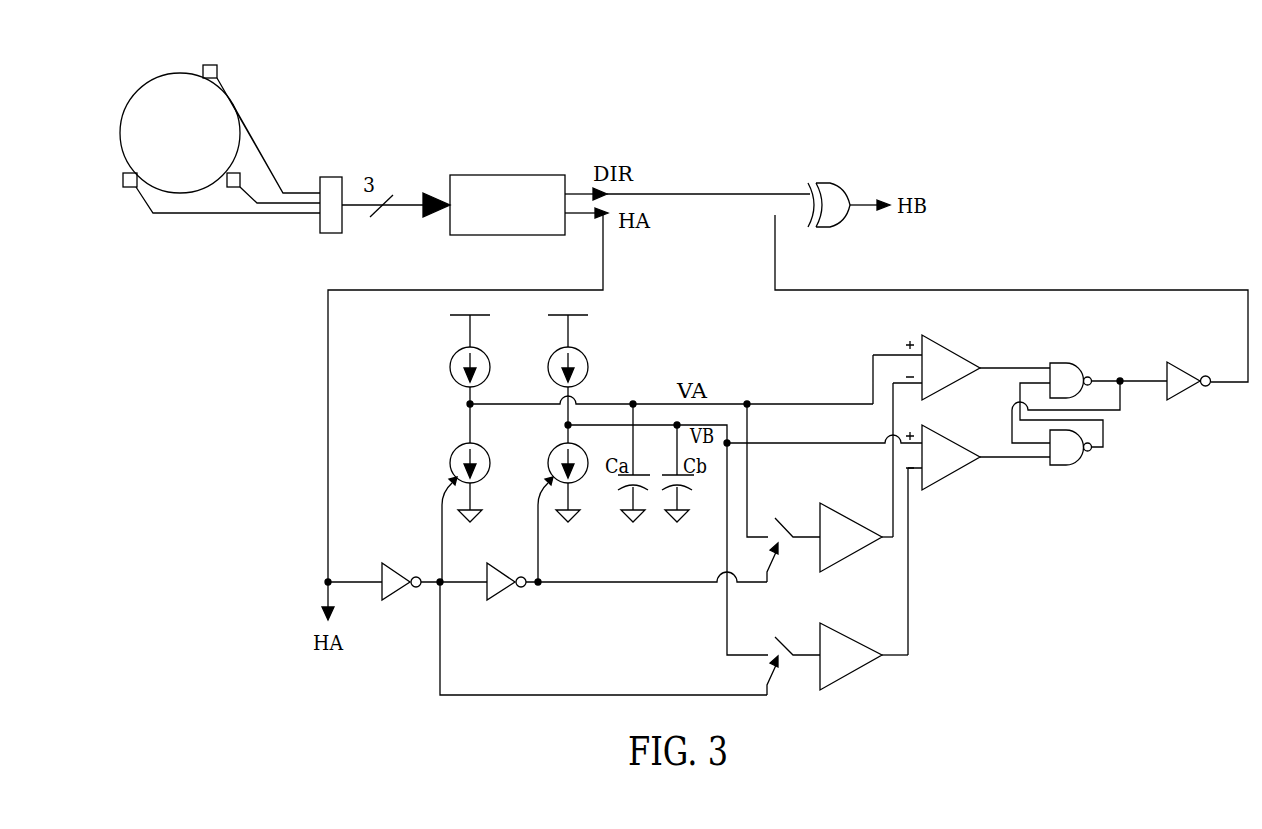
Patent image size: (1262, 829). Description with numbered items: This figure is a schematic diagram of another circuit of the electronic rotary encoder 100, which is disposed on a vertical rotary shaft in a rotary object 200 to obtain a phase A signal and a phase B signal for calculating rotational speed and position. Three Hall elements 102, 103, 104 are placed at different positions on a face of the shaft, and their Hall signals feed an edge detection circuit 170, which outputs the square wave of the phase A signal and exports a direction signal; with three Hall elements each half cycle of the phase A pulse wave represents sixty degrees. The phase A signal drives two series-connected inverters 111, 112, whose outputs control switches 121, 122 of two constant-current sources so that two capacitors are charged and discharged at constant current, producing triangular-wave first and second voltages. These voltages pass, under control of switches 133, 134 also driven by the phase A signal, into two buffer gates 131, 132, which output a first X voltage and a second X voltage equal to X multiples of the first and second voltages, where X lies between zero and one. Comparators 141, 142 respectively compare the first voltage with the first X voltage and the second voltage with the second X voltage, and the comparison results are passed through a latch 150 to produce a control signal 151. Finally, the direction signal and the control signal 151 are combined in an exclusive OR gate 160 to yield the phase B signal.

The rotary object 200 is at (157, 90).
The Hall element 102 is at (123, 187).
The Hall element 103 is at (227, 187).
The Hall element 104 is at (213, 67).
The edge detection circuit 170 is at (528, 182).
The electronic rotary encoder 100 is at (698, 121).
The exclusive OR gate 160 is at (837, 180).
The control signal 151 is at (1087, 290).
The comparator 141 is at (940, 347).
The comparator 142 is at (940, 437).
The latch 150 is at (1150, 456).
The switch 121 is at (446, 484).
The switch 122 is at (543, 484).
The inverter 111 is at (393, 590).
The inverter 112 is at (500, 590).
The switch 133 is at (790, 522).
The switch 134 is at (790, 640).
The buffer gate 131 is at (838, 557).
The buffer gate 132 is at (838, 675).